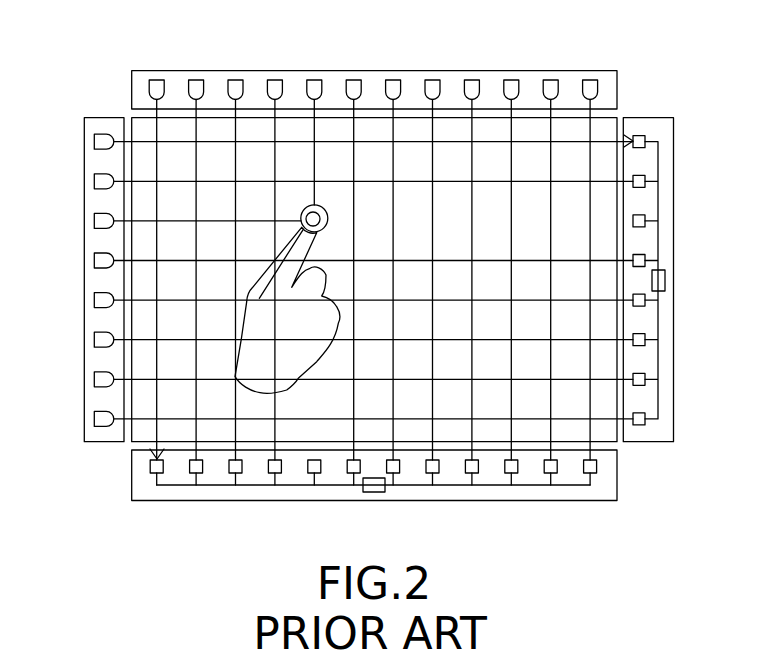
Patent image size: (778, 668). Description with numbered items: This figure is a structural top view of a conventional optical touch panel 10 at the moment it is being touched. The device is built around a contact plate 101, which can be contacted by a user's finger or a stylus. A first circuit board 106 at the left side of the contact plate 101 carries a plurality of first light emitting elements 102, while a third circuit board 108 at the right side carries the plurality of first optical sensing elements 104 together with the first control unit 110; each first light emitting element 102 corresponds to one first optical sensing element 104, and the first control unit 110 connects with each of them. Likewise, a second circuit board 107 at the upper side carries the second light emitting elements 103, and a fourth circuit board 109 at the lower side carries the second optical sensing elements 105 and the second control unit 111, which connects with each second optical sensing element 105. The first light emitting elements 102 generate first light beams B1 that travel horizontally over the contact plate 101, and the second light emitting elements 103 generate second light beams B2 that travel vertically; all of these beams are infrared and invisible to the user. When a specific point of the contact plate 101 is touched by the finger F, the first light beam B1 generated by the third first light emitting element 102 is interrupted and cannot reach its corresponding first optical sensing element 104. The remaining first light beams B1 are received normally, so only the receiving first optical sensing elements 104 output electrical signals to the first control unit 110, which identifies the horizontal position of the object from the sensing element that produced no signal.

The optical touch panel 10 is at (607, 31).
The contact plate 101 is at (360, 132).
The first light emitting elements 102 is at (100, 137).
The second light emitting elements 103 is at (155, 86).
The first optical sensing elements 104 is at (639, 177).
The second optical sensing elements 105 is at (148, 465).
The first circuit board 106 is at (91, 247).
The second circuit board 107 is at (492, 82).
The third circuit board 108 is at (665, 217).
The fourth circuit board 109 is at (573, 493).
The first control unit 110 is at (383, 485).
The second control unit 111 is at (660, 270).
The first light beams B1 is at (607, 140).
The second light beams B2 is at (155, 405).
The finger F is at (300, 240).